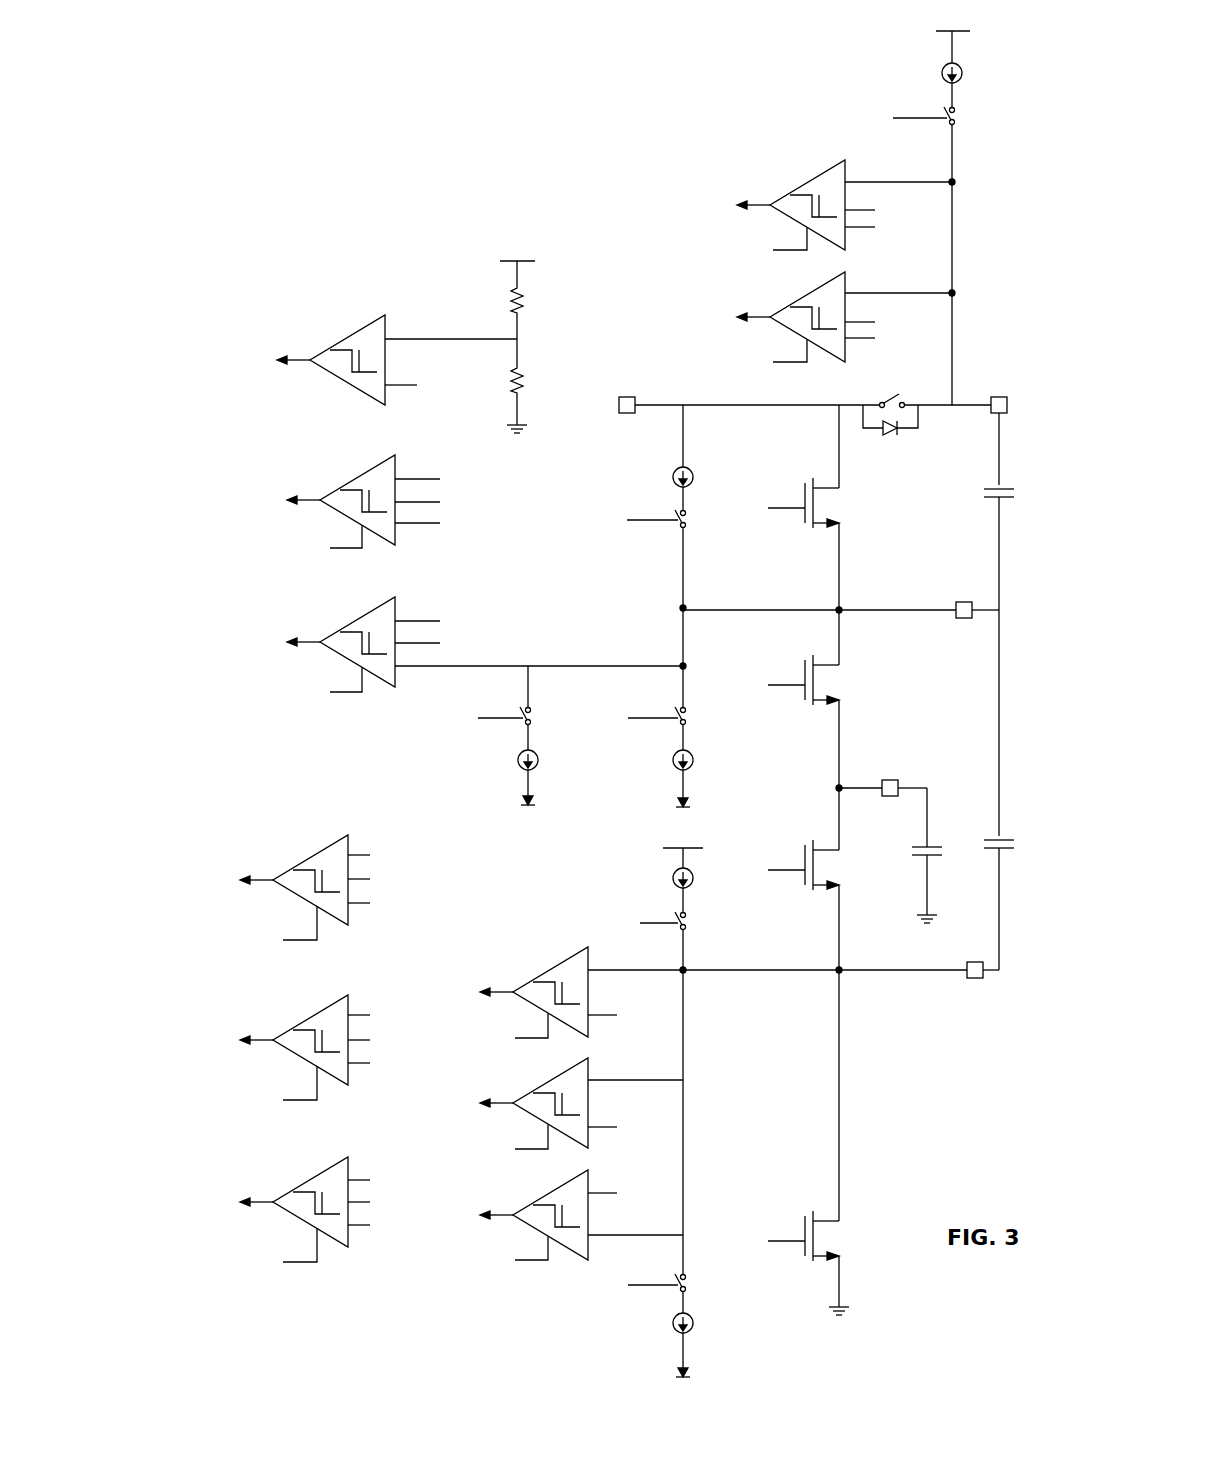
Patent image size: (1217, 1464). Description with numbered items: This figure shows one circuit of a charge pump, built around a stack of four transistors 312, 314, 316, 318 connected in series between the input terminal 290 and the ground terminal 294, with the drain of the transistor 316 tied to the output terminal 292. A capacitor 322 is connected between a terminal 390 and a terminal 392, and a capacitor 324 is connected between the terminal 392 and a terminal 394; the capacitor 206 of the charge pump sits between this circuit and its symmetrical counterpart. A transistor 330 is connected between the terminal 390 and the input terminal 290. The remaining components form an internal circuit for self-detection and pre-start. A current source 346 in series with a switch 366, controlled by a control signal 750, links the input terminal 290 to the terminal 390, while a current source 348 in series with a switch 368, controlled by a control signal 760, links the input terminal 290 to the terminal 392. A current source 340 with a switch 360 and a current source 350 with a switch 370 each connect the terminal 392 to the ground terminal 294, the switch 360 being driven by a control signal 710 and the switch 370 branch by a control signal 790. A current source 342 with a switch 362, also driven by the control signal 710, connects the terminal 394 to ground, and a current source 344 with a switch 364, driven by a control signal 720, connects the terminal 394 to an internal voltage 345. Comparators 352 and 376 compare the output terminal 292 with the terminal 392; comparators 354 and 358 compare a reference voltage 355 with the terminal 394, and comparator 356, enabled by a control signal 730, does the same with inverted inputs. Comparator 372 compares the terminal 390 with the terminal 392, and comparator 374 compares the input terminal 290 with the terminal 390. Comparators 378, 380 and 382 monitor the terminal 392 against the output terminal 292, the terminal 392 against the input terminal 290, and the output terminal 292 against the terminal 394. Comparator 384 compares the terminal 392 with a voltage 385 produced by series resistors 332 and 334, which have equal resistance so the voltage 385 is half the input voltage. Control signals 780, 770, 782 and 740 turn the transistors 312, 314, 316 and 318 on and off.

The input terminal 290 is at (953, 50).
The current source 346 is at (962, 74).
The switch 366 is at (955, 110).
The control signal 750 is at (912, 118).
The comparator 374 is at (790, 217).
The comparator 372 is at (790, 329).
The terminal 392 is at (875, 338).
The transistor 330 is at (898, 400).
The terminal 390 is at (997, 395).
The voltage 385 is at (386, 316).
The resistor 332 is at (518, 316).
The resistor 334 is at (518, 397).
The ground terminal 294 is at (517, 415).
The comparator 384 is at (350, 384).
The comparator 376 is at (376, 466).
The output terminal 292 is at (430, 523).
The comparator 352 is at (375, 609).
The current source 348 is at (693, 477).
The control signal 760 is at (650, 520).
The switch 368 is at (688, 523).
The transistor 312 is at (813, 488).
The control signal 780 is at (800, 508).
The capacitor 322 is at (985, 489).
The transistor 314 is at (813, 665).
The control signal 770 is at (800, 685).
The control signal 790 is at (478, 718).
The switch 370 is at (531, 710).
The control signal 710 is at (630, 718).
The switch 360 is at (688, 725).
The current source 340 is at (694, 760).
The current source 350 is at (530, 785).
The transistor 316 is at (813, 850).
The control signal 782 is at (800, 870).
The capacitor 324 is at (985, 840).
The capacitor 206 is at (920, 847).
The internal voltage 345 is at (688, 848).
The current source 344 is at (692, 880).
The switch 364 is at (688, 917).
The control signal 720 is at (637, 923).
The comparator 358 is at (552, 969).
The reference voltage 355 is at (605, 1015).
The comparator 356 is at (548, 1083).
The control signal 730 is at (545, 1122).
The comparator 354 is at (545, 1196).
The transistor 318 is at (815, 1221).
The control signal 740 is at (800, 1241).
The switch 362 is at (686, 1278).
The current source 342 is at (694, 1323).
The comparator 378 is at (300, 895).
The comparator 380 is at (300, 1055).
The comparator 382 is at (300, 1217).
The terminal 394 is at (972, 962).